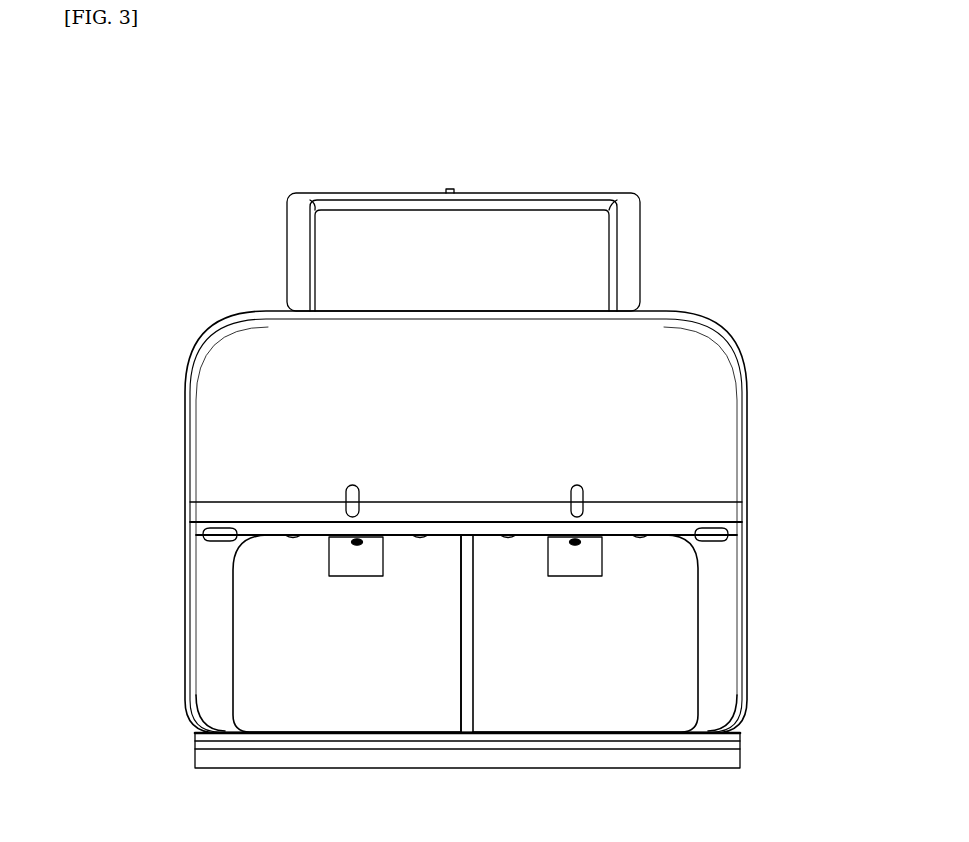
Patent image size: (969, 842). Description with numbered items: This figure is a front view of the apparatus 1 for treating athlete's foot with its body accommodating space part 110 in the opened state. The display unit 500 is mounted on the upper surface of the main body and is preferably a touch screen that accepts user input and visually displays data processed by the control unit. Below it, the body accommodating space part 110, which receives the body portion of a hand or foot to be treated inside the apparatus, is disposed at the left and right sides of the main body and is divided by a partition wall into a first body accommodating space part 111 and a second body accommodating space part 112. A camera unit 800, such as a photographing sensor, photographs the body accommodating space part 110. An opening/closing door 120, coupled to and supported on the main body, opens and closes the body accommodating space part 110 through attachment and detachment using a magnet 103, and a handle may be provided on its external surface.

The apparatus for treating athlete's foot 1 is at (634, 153).
The display unit 500 is at (512, 222).
The magnet 103 is at (205, 534).
The body accommodating space part 110 is at (457, 633).
The first body accommodating space part 111 is at (278, 643).
The second body accommodating space part 112 is at (682, 650).
The opening/closing door 120 is at (741, 737).
The camera unit 800 is at (356, 546).